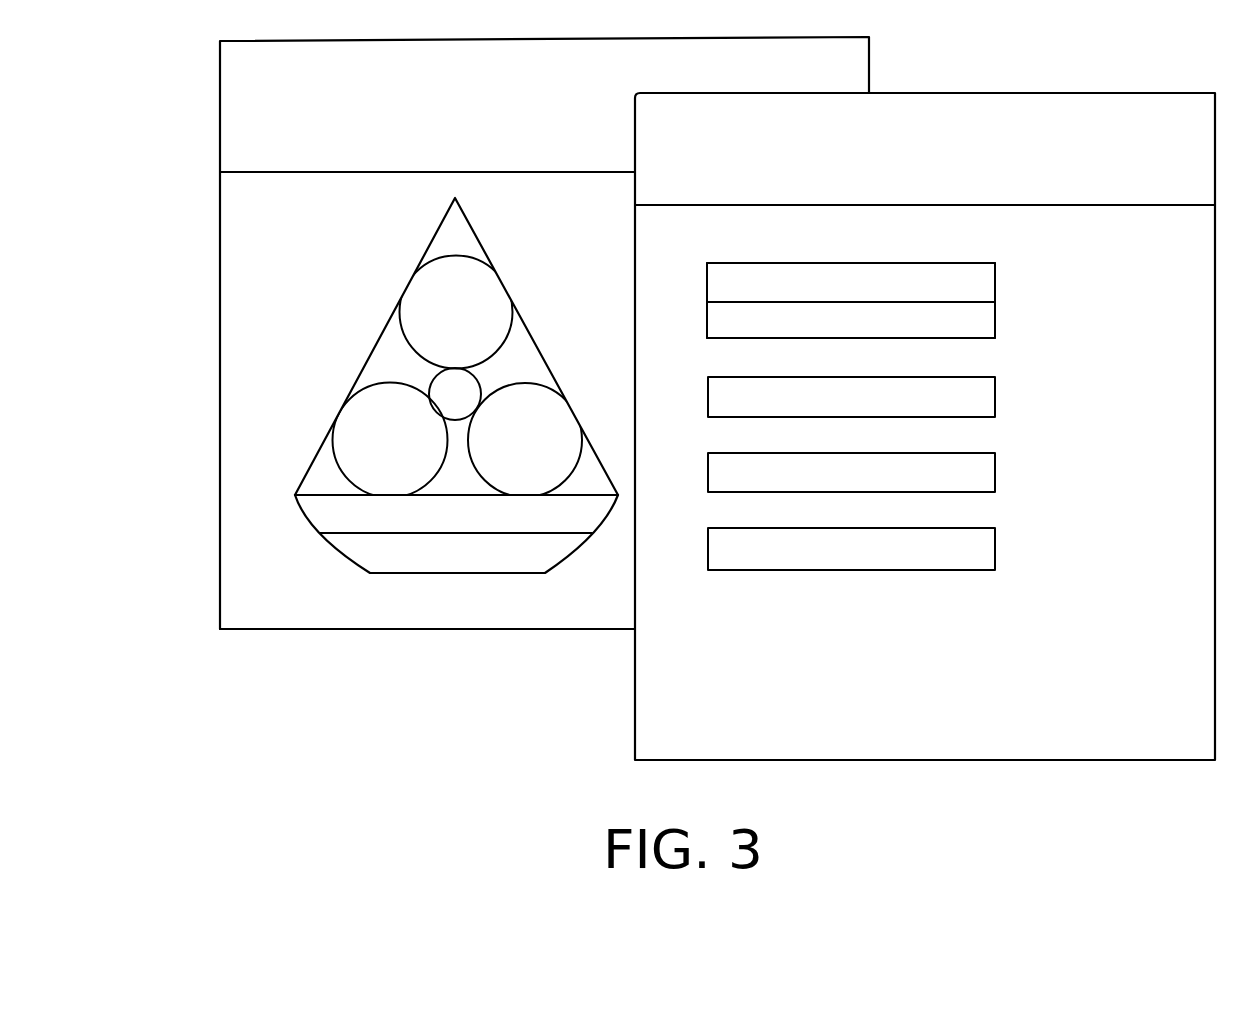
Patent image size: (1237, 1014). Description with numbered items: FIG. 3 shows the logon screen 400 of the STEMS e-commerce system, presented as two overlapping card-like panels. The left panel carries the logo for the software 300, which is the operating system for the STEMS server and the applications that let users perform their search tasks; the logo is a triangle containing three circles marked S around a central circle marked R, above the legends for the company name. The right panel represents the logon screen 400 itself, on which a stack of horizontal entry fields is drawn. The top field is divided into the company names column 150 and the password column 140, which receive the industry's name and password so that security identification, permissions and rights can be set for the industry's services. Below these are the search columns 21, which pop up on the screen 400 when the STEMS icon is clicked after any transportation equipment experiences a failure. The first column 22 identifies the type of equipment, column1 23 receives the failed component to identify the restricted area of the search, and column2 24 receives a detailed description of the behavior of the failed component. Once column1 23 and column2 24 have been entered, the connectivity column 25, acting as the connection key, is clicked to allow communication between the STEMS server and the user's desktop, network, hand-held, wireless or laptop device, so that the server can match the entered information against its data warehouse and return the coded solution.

The logon screen 400 is at (258, 518).
The software 300 is at (368, 357).
The company names column 150 is at (727, 282).
The password column 140 is at (718, 320).
The search columns 21 is at (955, 262).
The first column 22 is at (995, 302).
The column1 23 is at (995, 393).
The column2 24 is at (995, 465).
The connectivity column 25 is at (995, 540).